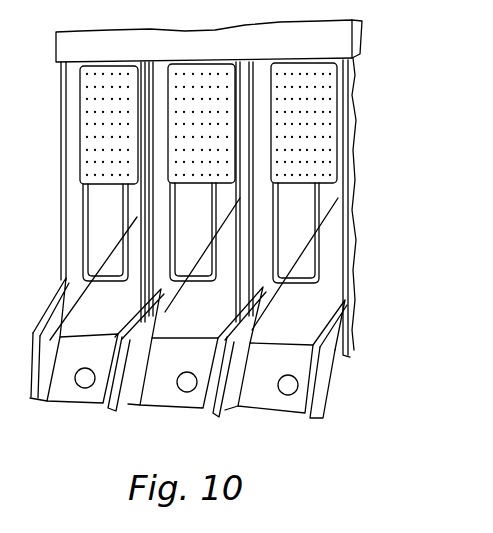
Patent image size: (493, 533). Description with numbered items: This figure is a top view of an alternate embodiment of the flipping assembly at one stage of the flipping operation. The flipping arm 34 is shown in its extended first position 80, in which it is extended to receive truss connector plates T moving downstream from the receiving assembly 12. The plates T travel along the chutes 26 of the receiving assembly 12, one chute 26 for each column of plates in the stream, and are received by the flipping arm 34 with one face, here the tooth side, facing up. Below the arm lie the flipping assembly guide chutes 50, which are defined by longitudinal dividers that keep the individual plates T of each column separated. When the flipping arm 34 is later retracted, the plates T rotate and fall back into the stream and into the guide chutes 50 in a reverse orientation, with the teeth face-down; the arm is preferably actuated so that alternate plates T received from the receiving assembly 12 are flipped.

The receiving assembly 12 is at (338, 392).
The chute 26 is at (262, 387).
The flipping arm 34 is at (320, 207).
The guide chute 50 is at (102, 318).
The first position 80 is at (326, 289).
The truss connector plate T is at (105, 149).